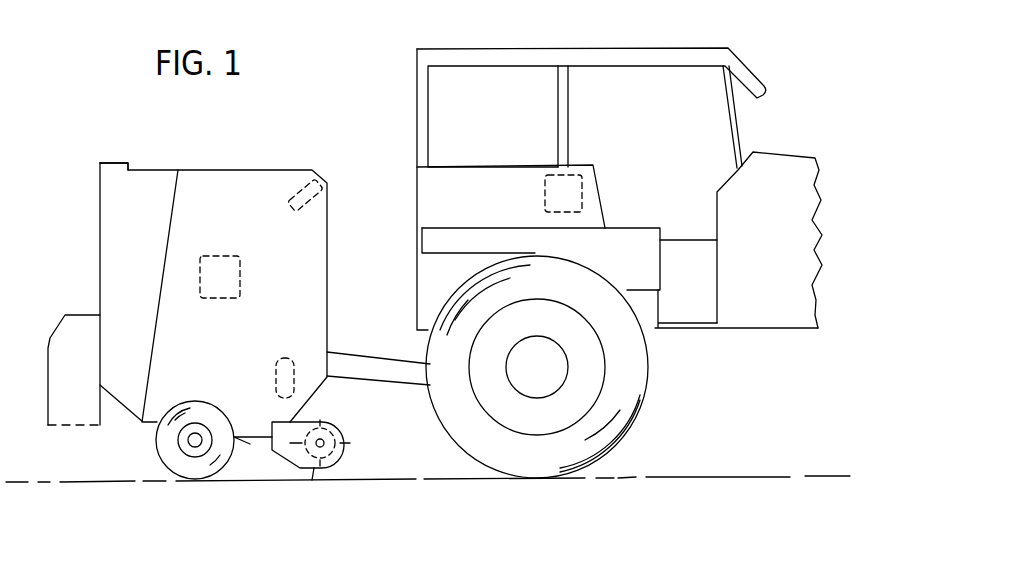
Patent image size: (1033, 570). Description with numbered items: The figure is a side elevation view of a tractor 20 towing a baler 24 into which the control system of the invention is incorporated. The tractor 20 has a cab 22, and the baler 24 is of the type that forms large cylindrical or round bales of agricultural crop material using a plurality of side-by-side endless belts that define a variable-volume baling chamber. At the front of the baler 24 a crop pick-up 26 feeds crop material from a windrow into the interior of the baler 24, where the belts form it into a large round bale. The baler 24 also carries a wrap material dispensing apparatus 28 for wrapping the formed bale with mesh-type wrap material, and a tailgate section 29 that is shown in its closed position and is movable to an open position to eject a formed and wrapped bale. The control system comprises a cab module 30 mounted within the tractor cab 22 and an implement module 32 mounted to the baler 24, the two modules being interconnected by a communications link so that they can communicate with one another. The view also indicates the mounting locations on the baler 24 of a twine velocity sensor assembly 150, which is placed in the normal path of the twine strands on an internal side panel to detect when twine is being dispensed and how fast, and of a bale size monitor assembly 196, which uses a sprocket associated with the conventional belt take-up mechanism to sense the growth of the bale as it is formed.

The tractor 20 is at (798, 103).
The cab 22 is at (630, 85).
The baler 24 is at (265, 144).
The crop pick-up 26 is at (352, 455).
The wrap material dispensing apparatus 28 is at (57, 306).
The tailgate section 29 is at (100, 198).
The cab module 30 is at (592, 175).
The implement module 32 is at (246, 280).
The twine velocity sensor assembly 150 is at (270, 377).
The bale size monitor assembly 196 is at (313, 208).